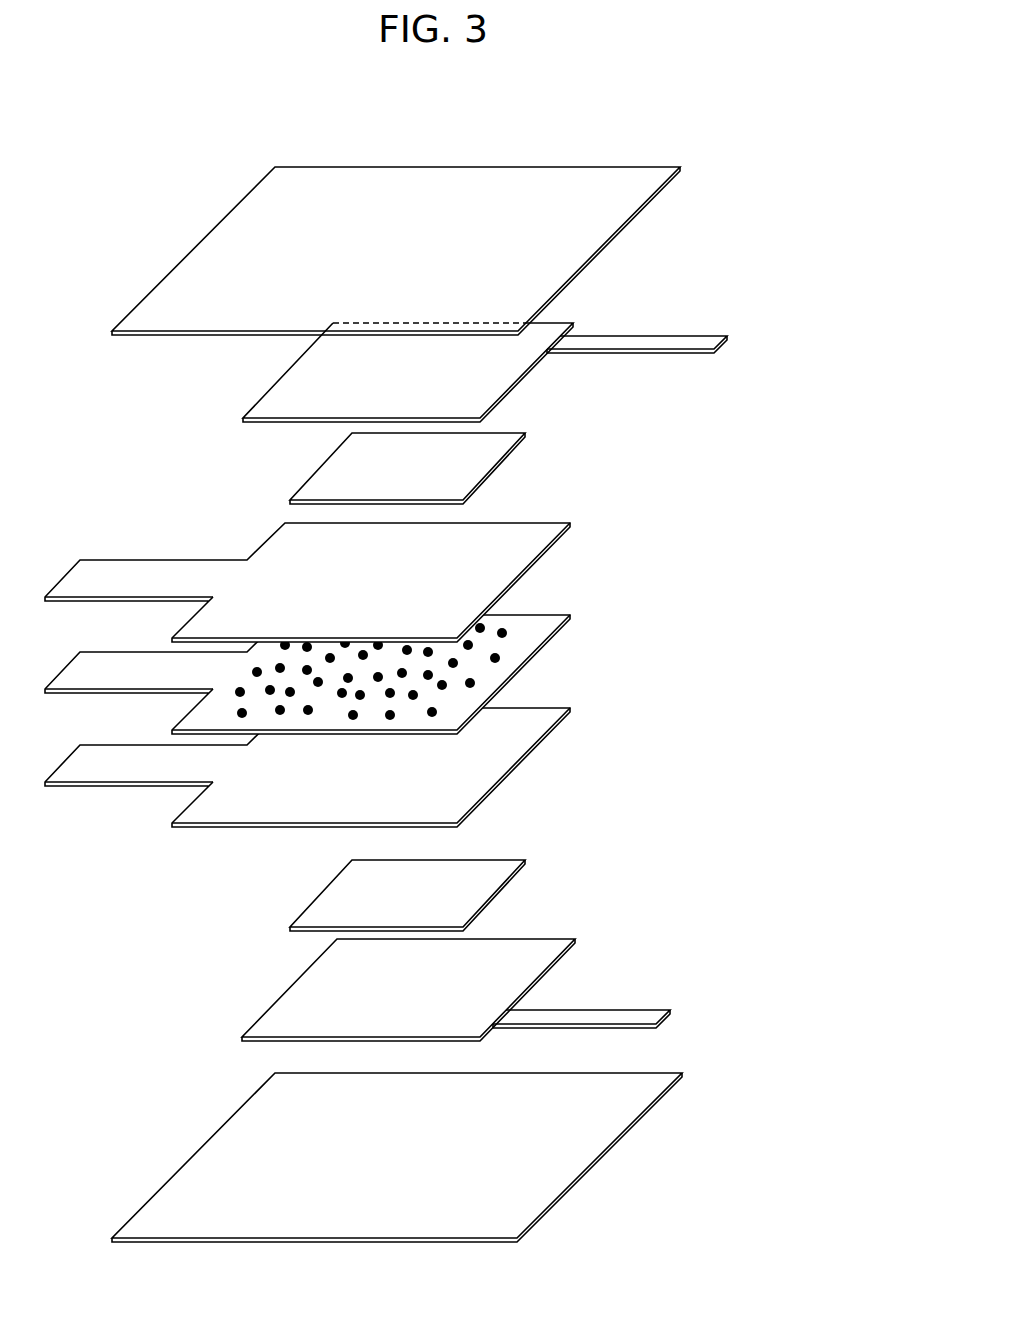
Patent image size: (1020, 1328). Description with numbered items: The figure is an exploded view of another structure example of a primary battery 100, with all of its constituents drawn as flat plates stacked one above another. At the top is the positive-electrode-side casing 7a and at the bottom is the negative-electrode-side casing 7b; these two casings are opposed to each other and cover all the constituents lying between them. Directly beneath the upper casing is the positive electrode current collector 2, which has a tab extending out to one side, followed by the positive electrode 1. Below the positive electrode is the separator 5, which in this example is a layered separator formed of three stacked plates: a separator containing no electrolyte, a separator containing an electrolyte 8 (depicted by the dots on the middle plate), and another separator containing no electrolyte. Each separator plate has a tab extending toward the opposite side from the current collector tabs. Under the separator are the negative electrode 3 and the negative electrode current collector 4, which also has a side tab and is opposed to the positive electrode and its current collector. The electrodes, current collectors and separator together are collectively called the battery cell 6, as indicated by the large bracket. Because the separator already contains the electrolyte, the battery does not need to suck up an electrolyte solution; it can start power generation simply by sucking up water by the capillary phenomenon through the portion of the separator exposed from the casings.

The primary battery 100 is at (524, 144).
The positive-electrode-side casing 7a is at (607, 241).
The negative-electrode-side casing 7b is at (600, 1138).
The positive electrode current collector 2 is at (510, 378).
The positive electrode 1 is at (485, 460).
The separator 5 is at (626, 513).
The electrolyte 8 is at (307, 714).
The negative electrode 3 is at (485, 890).
The negative electrode current collector 4 is at (535, 958).
The battery cell 6 is at (740, 317).